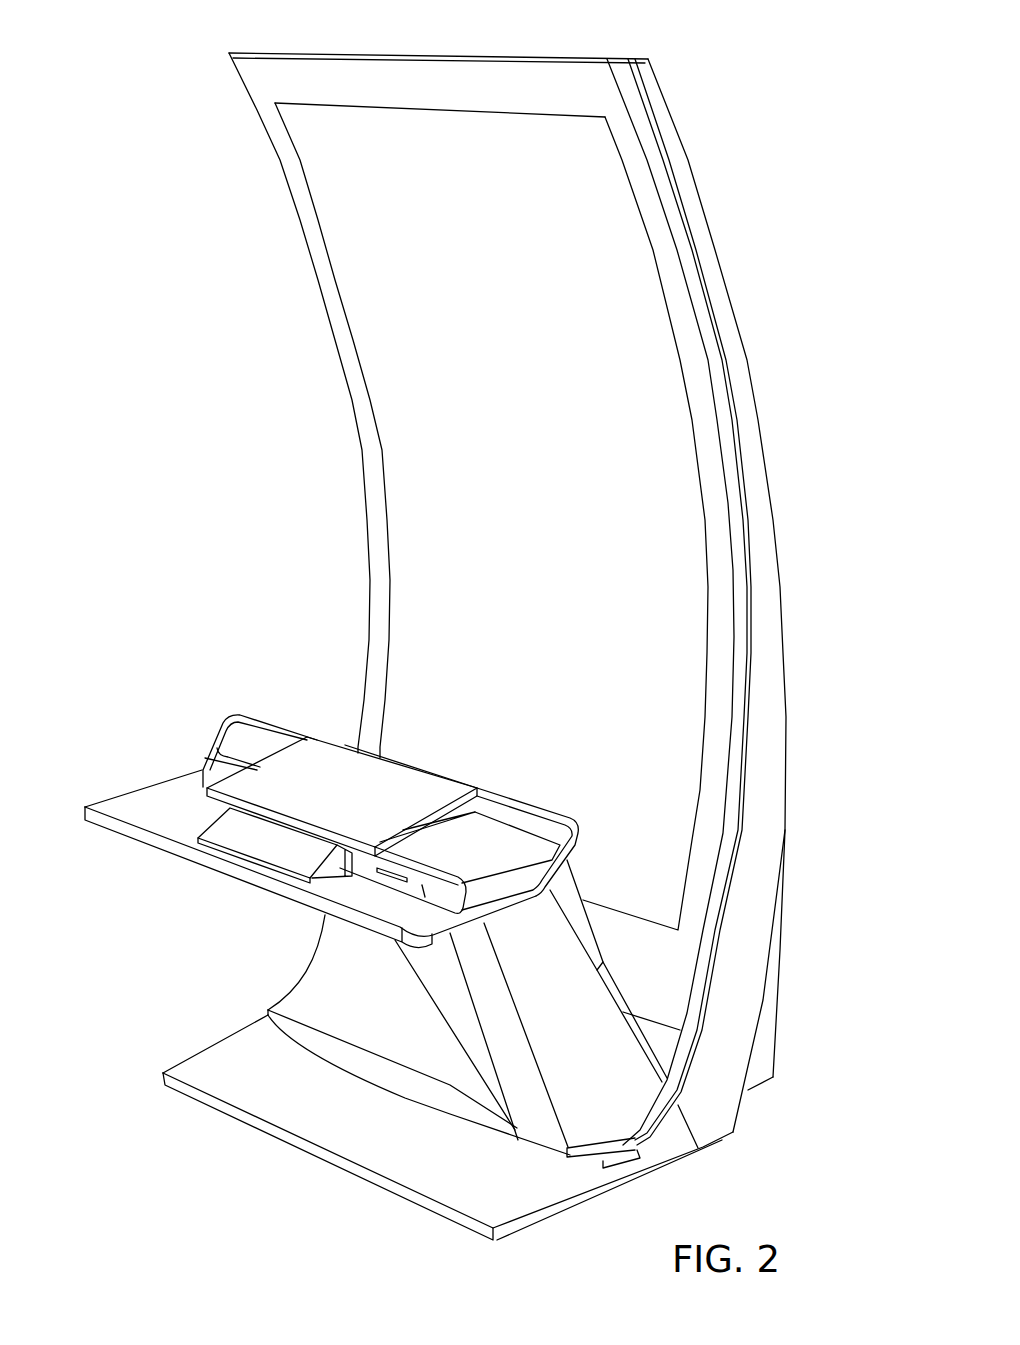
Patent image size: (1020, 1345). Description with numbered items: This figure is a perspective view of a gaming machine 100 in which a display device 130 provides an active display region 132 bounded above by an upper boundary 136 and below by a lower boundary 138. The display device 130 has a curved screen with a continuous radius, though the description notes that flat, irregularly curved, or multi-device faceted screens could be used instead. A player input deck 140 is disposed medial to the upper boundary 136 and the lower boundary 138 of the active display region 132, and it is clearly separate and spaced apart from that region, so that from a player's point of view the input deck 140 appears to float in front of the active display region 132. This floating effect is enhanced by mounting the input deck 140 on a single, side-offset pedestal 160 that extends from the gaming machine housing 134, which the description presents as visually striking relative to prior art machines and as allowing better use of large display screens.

The gaming machine 100 is at (437, 633).
The display device 130 is at (529, 592).
The active display region 132 is at (330, 230).
The gaming machine housing 134 is at (773, 522).
The upper boundary 136 is at (507, 113).
The lower boundary 138 is at (612, 908).
The player input deck 140 is at (148, 738).
The side-offset pedestal 160 is at (462, 1032).